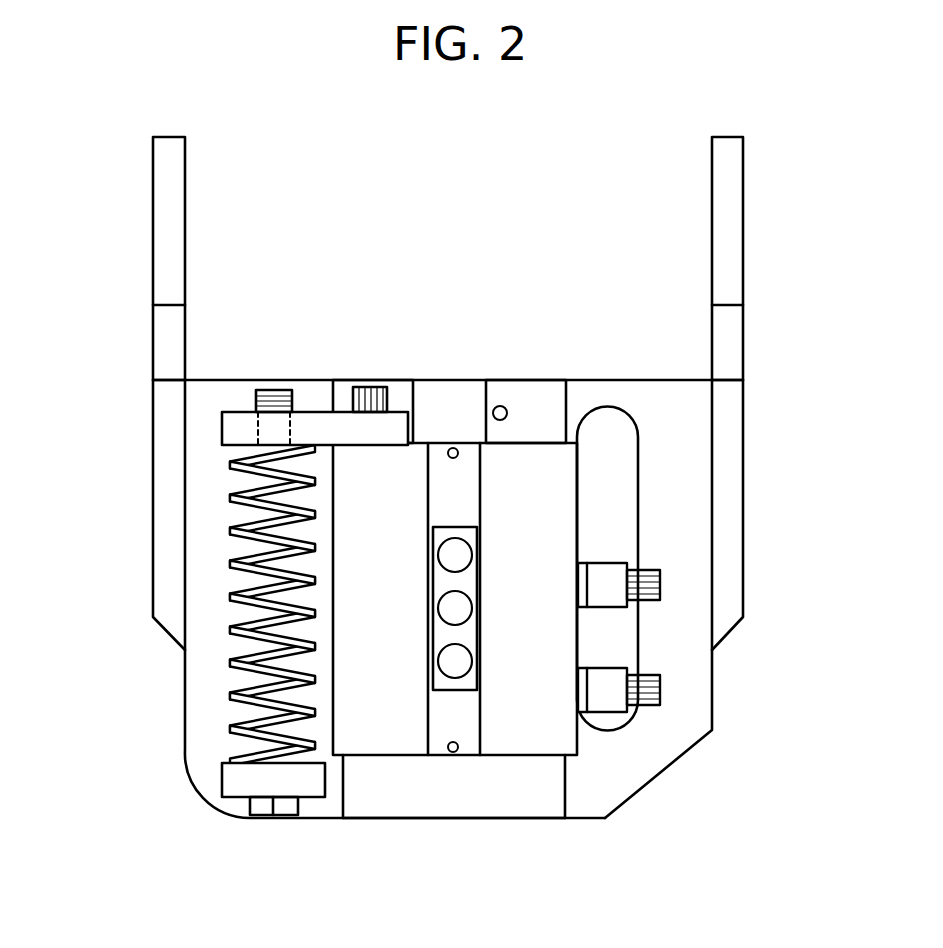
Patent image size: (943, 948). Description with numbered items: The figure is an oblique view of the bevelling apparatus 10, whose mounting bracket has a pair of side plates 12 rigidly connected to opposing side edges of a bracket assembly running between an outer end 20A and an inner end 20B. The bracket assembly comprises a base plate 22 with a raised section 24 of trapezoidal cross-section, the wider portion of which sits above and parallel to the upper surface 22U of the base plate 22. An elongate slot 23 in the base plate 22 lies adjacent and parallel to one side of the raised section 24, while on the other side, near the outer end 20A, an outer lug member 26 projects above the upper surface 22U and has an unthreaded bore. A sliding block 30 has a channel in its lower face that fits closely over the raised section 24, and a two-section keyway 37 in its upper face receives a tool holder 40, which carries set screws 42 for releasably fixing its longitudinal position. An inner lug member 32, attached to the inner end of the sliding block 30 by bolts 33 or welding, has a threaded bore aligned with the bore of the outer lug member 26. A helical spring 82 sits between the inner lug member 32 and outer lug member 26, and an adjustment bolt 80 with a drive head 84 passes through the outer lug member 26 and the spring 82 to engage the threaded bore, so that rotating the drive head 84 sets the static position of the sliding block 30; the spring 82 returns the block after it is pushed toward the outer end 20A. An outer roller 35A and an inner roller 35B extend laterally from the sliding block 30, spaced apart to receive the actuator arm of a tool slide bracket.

The bevelling apparatus 10 is at (596, 130).
The side plates 12 is at (152, 178).
The outer end 20A is at (479, 828).
The inner end 20B is at (450, 527).
The base plate 22 is at (638, 797).
The upper surface 22U is at (616, 781).
The elongate slot 23 is at (620, 492).
The raised section 24 is at (428, 790).
The outer lug member 26 is at (218, 814).
The sliding block 30 is at (455, 620).
The inner lug member 32 is at (244, 369).
The bolts 33 is at (370, 387).
The outer roller 35A is at (640, 714).
The inner roller 35B is at (606, 560).
The keyway 37 is at (452, 492).
The tool holder 40 is at (483, 582).
The set screws 42 is at (468, 550).
The adjustment bolt 80 is at (273, 390).
The helical spring 82 is at (230, 495).
The drive head 84 is at (252, 805).